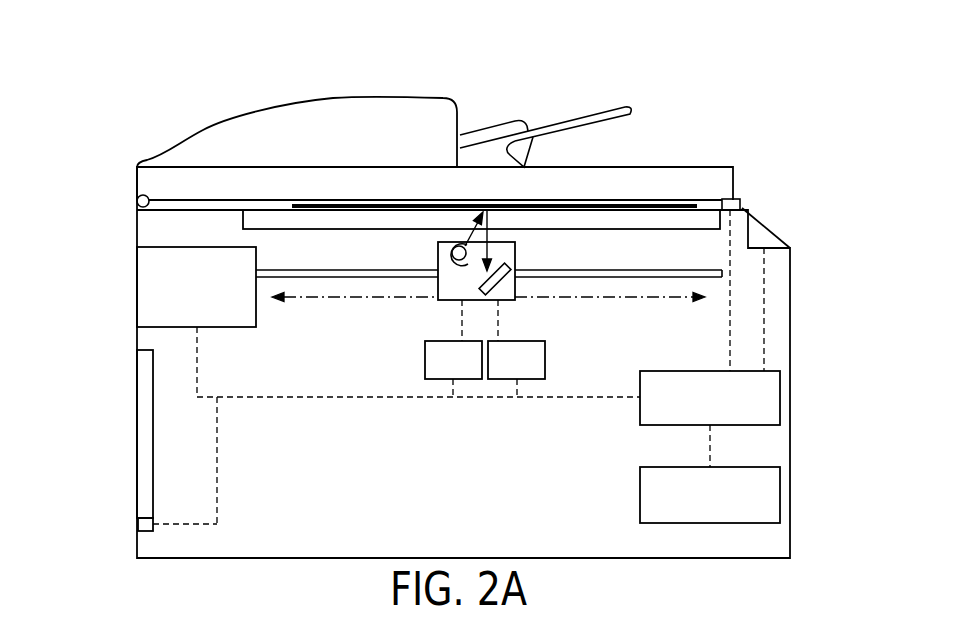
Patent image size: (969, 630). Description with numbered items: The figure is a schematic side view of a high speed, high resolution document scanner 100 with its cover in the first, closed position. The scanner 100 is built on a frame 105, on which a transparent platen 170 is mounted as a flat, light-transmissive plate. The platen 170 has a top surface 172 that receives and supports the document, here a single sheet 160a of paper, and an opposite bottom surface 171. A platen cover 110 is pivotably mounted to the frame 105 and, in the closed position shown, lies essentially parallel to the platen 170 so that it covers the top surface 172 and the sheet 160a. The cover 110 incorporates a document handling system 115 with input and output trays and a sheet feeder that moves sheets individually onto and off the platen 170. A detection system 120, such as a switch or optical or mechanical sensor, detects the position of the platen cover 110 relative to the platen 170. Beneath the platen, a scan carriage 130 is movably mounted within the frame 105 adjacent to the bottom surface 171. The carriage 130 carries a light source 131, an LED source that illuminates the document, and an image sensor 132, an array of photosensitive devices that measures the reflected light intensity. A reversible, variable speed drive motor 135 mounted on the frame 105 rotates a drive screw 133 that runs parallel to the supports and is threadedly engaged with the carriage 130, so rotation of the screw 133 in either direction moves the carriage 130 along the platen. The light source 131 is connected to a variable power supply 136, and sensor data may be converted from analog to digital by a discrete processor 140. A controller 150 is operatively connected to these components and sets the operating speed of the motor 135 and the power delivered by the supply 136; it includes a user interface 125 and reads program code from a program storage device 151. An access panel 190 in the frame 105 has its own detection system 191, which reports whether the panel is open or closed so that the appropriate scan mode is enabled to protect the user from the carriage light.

The document scanner 100 is at (108, 121).
The frame 105 is at (791, 378).
The platen cover 110 is at (733, 182).
The document handling system 115 is at (460, 107).
The detection system 120 is at (740, 204).
The user interface 125 is at (780, 238).
The scan carriage 130 is at (515, 262).
The light source 131 is at (453, 266).
The image sensor 132 is at (497, 288).
The drive screw 133 is at (610, 271).
The drive motor 135 is at (181, 294).
The variable power supply 136 is at (438, 369).
The discrete processor 140 is at (501, 369).
The controller 150 is at (695, 407).
The program storage device 151 is at (695, 503).
The sheet 160a is at (653, 204).
The transparent platen 170 is at (243, 216).
The bottom surface 171 is at (302, 239).
The top surface 172 is at (257, 199).
The access panel 190 is at (145, 441).
The detection system 191 is at (140, 525).